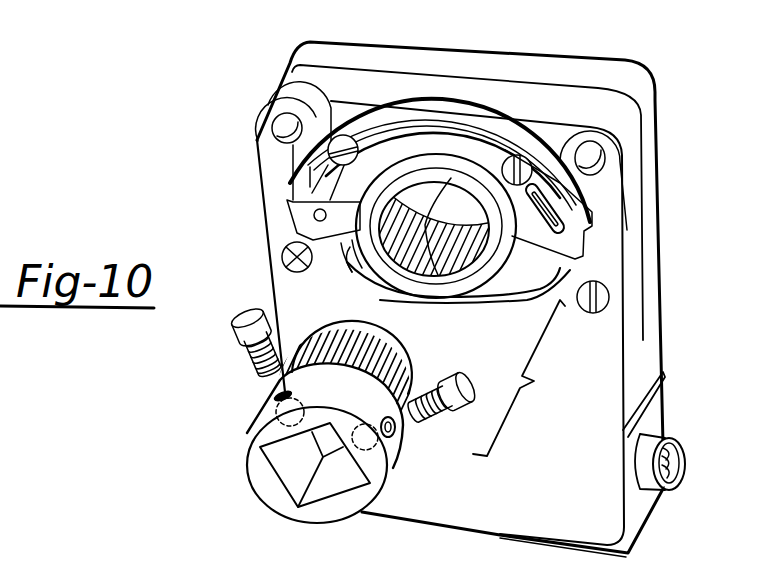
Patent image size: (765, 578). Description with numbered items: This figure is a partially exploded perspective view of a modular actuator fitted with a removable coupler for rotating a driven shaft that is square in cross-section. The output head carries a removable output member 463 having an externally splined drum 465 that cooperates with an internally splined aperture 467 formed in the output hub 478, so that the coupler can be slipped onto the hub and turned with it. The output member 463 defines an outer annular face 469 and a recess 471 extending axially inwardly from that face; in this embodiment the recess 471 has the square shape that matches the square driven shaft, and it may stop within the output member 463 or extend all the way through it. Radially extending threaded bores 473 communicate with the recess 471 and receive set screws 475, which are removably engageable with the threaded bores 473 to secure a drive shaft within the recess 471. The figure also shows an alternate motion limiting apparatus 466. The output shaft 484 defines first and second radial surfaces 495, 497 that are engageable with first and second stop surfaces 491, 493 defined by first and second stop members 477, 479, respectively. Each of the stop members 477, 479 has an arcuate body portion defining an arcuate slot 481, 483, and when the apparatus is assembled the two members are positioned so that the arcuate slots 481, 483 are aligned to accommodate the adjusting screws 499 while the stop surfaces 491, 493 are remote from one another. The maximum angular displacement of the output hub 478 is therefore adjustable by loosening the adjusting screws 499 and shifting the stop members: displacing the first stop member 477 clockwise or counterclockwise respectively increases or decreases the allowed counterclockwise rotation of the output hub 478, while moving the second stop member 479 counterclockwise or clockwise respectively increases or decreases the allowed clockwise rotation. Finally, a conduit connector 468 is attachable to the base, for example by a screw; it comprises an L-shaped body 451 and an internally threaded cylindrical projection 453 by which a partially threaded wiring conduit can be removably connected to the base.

The L-shaped body 451 is at (643, 513).
The internally threaded cylindrical projection 453 is at (673, 438).
The removable output member 463 is at (322, 422).
The externally splined drum 465 is at (403, 410).
The motion limiting apparatus 466 is at (598, 254).
The internally splined aperture 467 is at (443, 268).
The conduit connector 468 is at (677, 382).
The outer annular face 469 is at (258, 433).
The recess 471 is at (340, 477).
The threaded bores 473 is at (277, 393).
The set screws 475 is at (242, 350).
The first stop member 477 is at (479, 100).
The output hub 478 is at (410, 148).
The second stop member 479 is at (498, 140).
The arcuate slot 481 is at (262, 217).
The arcuate slot 483 is at (270, 185).
The output shaft 484 is at (410, 250).
The first stop surface 491 is at (277, 253).
The second stop surface 493 is at (566, 292).
The first radial surface 495 is at (362, 308).
The second radial surface 497 is at (493, 283).
The adjusting screws 499 is at (284, 84).